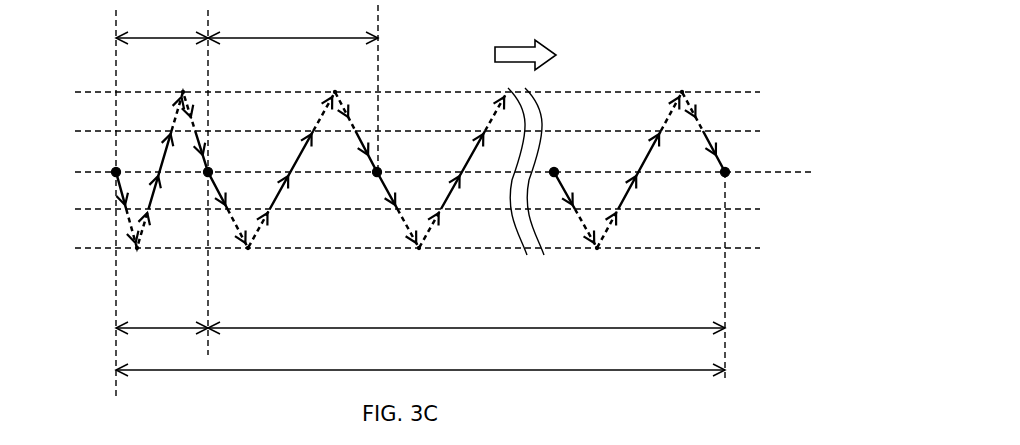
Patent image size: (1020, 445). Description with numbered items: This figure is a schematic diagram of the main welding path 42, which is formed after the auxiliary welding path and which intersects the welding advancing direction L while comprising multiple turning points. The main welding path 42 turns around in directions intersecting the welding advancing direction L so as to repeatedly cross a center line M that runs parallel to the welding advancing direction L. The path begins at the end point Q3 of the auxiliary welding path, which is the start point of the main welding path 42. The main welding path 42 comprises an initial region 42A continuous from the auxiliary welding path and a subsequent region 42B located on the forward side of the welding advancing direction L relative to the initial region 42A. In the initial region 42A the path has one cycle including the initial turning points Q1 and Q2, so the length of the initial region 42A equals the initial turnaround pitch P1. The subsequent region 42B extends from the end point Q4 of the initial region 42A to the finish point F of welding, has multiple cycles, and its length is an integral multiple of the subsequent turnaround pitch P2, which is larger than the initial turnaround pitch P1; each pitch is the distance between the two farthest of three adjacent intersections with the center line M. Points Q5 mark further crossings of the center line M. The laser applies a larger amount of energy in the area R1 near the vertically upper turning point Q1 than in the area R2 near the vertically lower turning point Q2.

The main welding path 42 is at (420, 384).
The initial region 42A is at (162, 343).
The subsequent region 42B is at (466, 343).
The initial turnaround pitch P1 is at (162, 27).
The subsequent turnaround pitch P2 is at (293, 27).
The turning point Q1 is at (183, 92).
The turning point Q2 is at (137, 250).
The end point of the auxiliary welding path Q3 is at (116, 172).
The end point in the initial region Q4 is at (208, 172).
The intermediate point on center line Q5 is at (377, 172).
The finish point F is at (725, 172).
The center line M is at (456, 173).
The area in the neighborhood of the turning point Q1 R1 is at (748, 110).
The area in the neighborhood of the turning point Q2 R2 is at (748, 230).
The welding advancing direction L is at (512, 55).